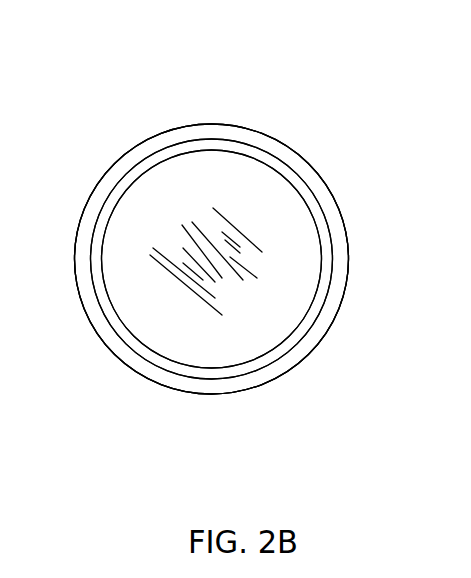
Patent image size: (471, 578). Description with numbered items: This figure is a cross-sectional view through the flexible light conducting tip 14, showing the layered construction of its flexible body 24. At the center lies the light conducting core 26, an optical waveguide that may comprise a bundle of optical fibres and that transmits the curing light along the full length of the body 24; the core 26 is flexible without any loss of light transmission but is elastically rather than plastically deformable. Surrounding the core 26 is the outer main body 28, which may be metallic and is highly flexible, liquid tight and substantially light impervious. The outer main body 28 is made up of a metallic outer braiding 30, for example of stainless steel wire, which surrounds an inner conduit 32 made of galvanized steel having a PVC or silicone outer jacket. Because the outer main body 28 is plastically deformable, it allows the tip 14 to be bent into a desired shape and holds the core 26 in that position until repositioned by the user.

The light conducting tip 14 is at (323, 131).
The flexible body 24 is at (212, 120).
The light conducting core 26 is at (158, 215).
The outer main body 28 is at (348, 222).
The metallic outer braiding 30 is at (340, 258).
The inner conduit 32 is at (323, 298).